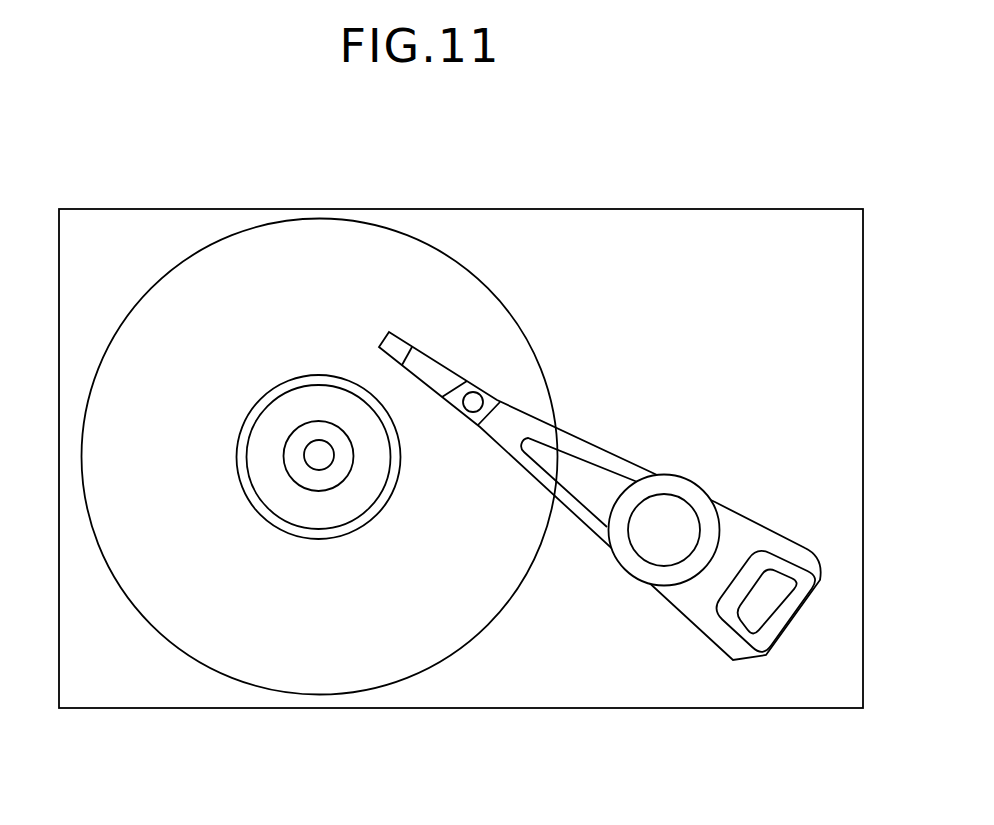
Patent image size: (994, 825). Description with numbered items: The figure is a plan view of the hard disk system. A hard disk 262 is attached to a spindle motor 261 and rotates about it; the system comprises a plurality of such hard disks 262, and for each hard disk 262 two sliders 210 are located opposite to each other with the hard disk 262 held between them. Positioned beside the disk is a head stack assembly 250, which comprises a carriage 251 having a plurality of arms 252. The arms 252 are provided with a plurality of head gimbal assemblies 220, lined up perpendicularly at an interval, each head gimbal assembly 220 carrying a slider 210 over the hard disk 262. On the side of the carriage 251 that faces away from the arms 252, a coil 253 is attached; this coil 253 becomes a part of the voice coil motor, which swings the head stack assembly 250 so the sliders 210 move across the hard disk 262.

The slider 210 is at (404, 336).
The head gimbal assembly 220 is at (442, 398).
The head stack assembly 250 is at (606, 458).
The carriage 251 is at (677, 474).
The arm 252 is at (588, 530).
The coil 253 is at (800, 617).
The spindle motor 261 is at (315, 470).
The hard disk 262 is at (233, 678).